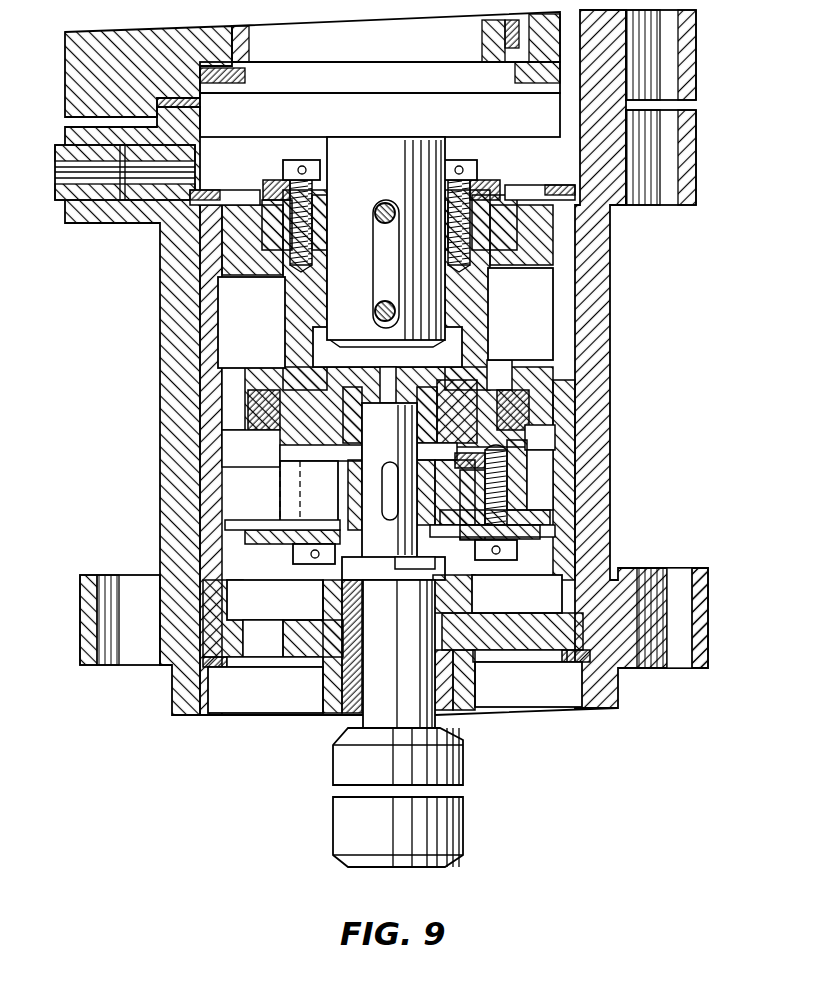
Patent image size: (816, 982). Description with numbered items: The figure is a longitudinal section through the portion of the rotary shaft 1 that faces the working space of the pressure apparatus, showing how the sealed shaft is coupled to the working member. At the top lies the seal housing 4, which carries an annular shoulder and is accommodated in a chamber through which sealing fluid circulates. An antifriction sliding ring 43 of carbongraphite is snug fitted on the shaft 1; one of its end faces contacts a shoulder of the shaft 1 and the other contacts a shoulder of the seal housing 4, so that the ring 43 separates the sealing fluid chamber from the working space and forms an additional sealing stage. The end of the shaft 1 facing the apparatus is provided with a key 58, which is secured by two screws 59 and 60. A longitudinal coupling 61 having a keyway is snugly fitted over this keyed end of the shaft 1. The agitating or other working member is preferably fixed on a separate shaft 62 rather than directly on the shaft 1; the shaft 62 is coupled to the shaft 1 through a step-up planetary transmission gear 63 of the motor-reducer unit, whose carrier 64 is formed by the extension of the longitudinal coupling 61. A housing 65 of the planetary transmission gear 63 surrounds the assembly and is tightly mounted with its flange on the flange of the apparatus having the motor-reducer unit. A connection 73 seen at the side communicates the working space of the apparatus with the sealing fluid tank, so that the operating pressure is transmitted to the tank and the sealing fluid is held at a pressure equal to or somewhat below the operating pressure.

The rotary shaft 1 is at (394, 237).
The housing 4 is at (66, 60).
The antifriction sliding ring 43 is at (380, 74).
The key 58 is at (377, 254).
The screw 59 is at (375, 214).
The screw 60 is at (375, 314).
The longitudinal coupling 61 is at (292, 301).
The separate shaft 62 is at (340, 765).
The step-up planetary transmission gear 63 is at (550, 465).
The carrier 64 is at (516, 542).
The housing of the planetary transmission gear 65 is at (175, 452).
The connection 73 is at (56, 200).